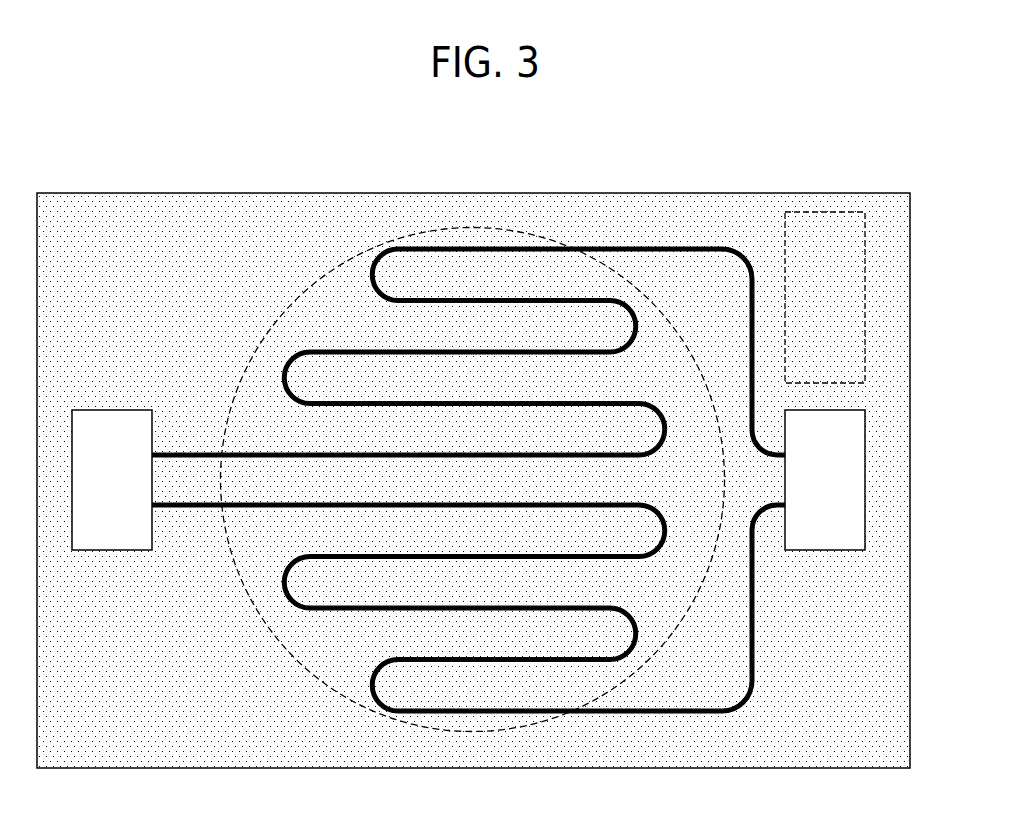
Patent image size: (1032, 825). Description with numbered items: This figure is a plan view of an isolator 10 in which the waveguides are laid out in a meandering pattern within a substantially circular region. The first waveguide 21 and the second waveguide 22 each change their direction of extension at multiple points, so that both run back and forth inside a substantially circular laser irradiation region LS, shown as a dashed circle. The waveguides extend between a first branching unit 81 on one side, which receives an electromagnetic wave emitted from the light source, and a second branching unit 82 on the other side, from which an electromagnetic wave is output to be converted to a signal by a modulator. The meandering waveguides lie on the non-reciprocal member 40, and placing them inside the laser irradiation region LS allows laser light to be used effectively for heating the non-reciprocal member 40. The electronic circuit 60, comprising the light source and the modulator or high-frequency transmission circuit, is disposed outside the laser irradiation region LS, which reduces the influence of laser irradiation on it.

The isolator 10 is at (798, 110).
The non-reciprocal member 40 is at (183, 218).
The electronic circuit 60 is at (829, 211).
The first waveguide 21 is at (185, 450).
The second waveguide 22 is at (177, 510).
The first branching unit 81 is at (113, 427).
The second branching unit 82 is at (823, 535).
The laser irradiation region LS is at (275, 640).